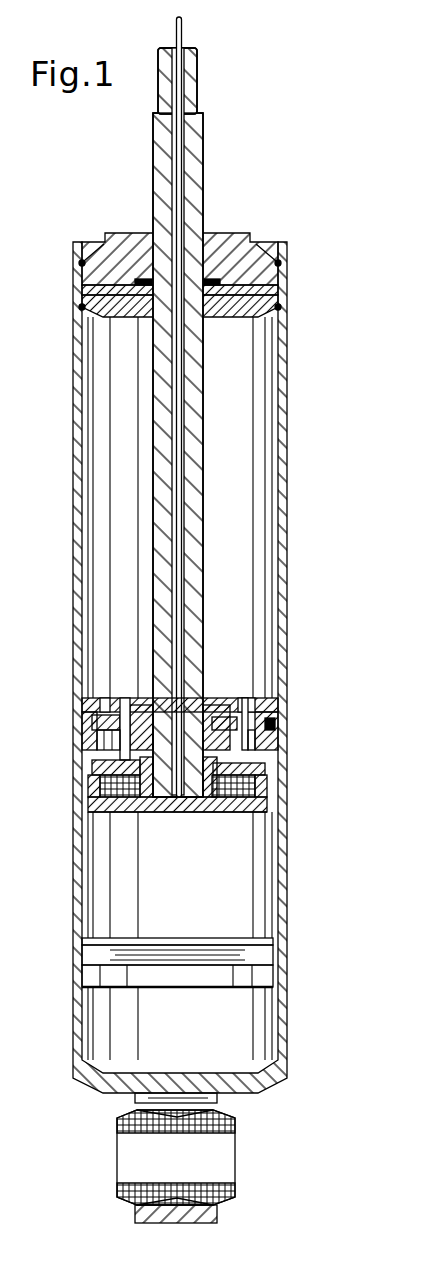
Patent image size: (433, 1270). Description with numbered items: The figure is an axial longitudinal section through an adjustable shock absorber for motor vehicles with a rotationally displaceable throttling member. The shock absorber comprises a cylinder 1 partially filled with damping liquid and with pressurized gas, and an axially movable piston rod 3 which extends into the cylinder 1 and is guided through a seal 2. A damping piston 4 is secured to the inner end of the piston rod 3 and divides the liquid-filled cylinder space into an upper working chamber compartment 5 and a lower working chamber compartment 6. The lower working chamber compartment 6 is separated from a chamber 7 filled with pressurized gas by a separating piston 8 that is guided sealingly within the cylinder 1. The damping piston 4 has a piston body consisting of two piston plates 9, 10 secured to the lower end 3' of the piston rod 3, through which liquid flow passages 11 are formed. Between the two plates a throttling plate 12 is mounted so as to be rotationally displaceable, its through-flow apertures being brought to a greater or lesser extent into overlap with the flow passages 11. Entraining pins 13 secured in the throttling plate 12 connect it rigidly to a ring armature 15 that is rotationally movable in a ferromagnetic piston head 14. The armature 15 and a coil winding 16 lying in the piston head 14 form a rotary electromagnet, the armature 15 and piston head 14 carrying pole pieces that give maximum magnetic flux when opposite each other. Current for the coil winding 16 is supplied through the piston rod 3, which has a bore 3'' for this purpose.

The cylinder 1 is at (288, 588).
The seal 2 is at (255, 262).
The piston rod 3 is at (194, 422).
The lower end of the piston rod 3' is at (238, 775).
The bore 3'' is at (210, 407).
The damping piston 4 is at (232, 693).
The working chamber compartment 5 is at (257, 540).
The lower working chamber compartment 6 is at (262, 850).
The chamber filled with pressurized gas 7 is at (263, 1018).
The separating piston 8 is at (267, 952).
The piston plate 9 is at (130, 698).
The piston plate 10 is at (277, 740).
The liquid flow passages 11 is at (90, 700).
The throttling plate 12 is at (90, 722).
The entraining pins 13 is at (88, 738).
The piston head 14 is at (130, 813).
The ring armature 15 is at (100, 768).
The coil winding 16 is at (110, 797).